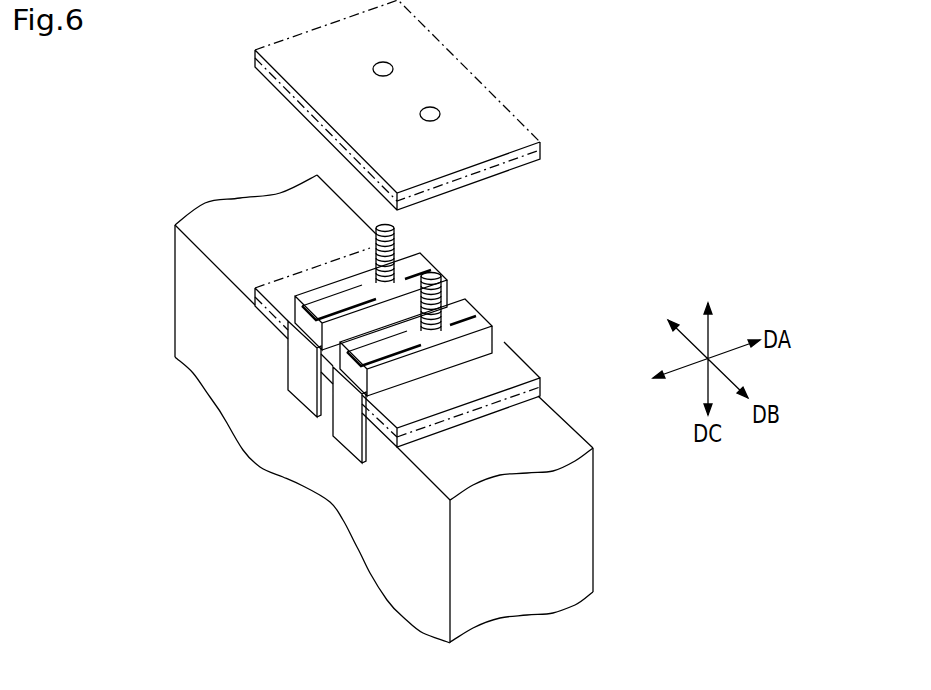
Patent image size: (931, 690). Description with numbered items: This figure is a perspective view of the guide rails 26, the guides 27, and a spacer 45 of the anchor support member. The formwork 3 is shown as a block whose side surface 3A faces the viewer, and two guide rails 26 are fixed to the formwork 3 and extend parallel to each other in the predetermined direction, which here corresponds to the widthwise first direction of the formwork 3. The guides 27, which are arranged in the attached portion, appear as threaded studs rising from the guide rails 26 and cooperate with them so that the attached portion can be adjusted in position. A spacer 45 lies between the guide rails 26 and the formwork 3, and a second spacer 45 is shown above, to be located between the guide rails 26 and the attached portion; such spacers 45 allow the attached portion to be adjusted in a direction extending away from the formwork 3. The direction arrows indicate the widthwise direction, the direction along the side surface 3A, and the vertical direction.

The formwork 3 is at (173, 258).
The side surface 3A is at (185, 312).
The guide rails 26 is at (428, 255).
The guides 27 is at (368, 257).
The spacer 45 is at (543, 146).